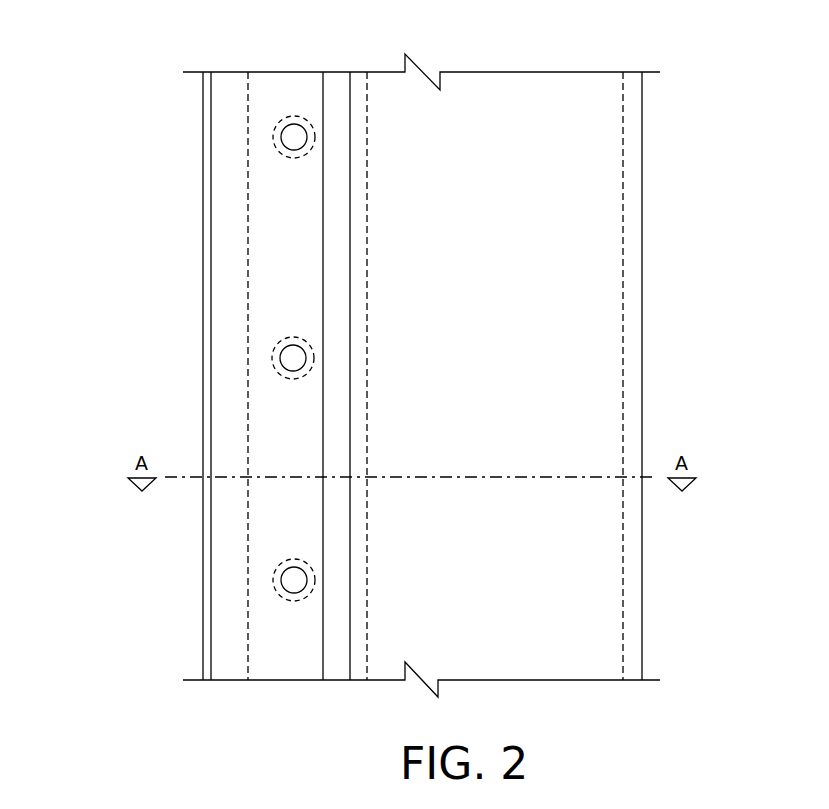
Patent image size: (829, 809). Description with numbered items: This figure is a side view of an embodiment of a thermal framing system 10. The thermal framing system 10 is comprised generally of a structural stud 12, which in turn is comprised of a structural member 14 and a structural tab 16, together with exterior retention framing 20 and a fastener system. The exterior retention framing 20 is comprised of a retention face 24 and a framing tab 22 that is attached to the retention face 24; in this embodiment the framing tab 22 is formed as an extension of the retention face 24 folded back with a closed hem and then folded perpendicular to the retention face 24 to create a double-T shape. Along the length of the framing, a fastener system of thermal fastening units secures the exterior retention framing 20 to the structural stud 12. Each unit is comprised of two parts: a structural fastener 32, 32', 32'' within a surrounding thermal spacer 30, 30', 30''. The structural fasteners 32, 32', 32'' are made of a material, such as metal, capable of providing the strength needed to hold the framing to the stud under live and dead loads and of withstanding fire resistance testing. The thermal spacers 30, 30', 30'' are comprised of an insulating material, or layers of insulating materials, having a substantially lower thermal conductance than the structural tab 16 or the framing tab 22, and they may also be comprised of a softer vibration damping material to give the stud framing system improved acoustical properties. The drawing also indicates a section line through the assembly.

The thermal framing system 10 is at (668, 354).
The structural stud 12 is at (564, 65).
The structural member 14 is at (495, 122).
The structural tab 16 is at (339, 107).
The exterior retention framing 20 is at (242, 62).
The framing tab 22 is at (291, 100).
The retention face 24 is at (201, 105).
The thermal spacer 30 is at (179, 137).
The structural fastener 32 is at (175, 160).
The thermal spacer 30' is at (178, 357).
The structural fastener 32' is at (174, 382).
The thermal spacer 30'' is at (179, 579).
The structural fastener 32'' is at (175, 602).